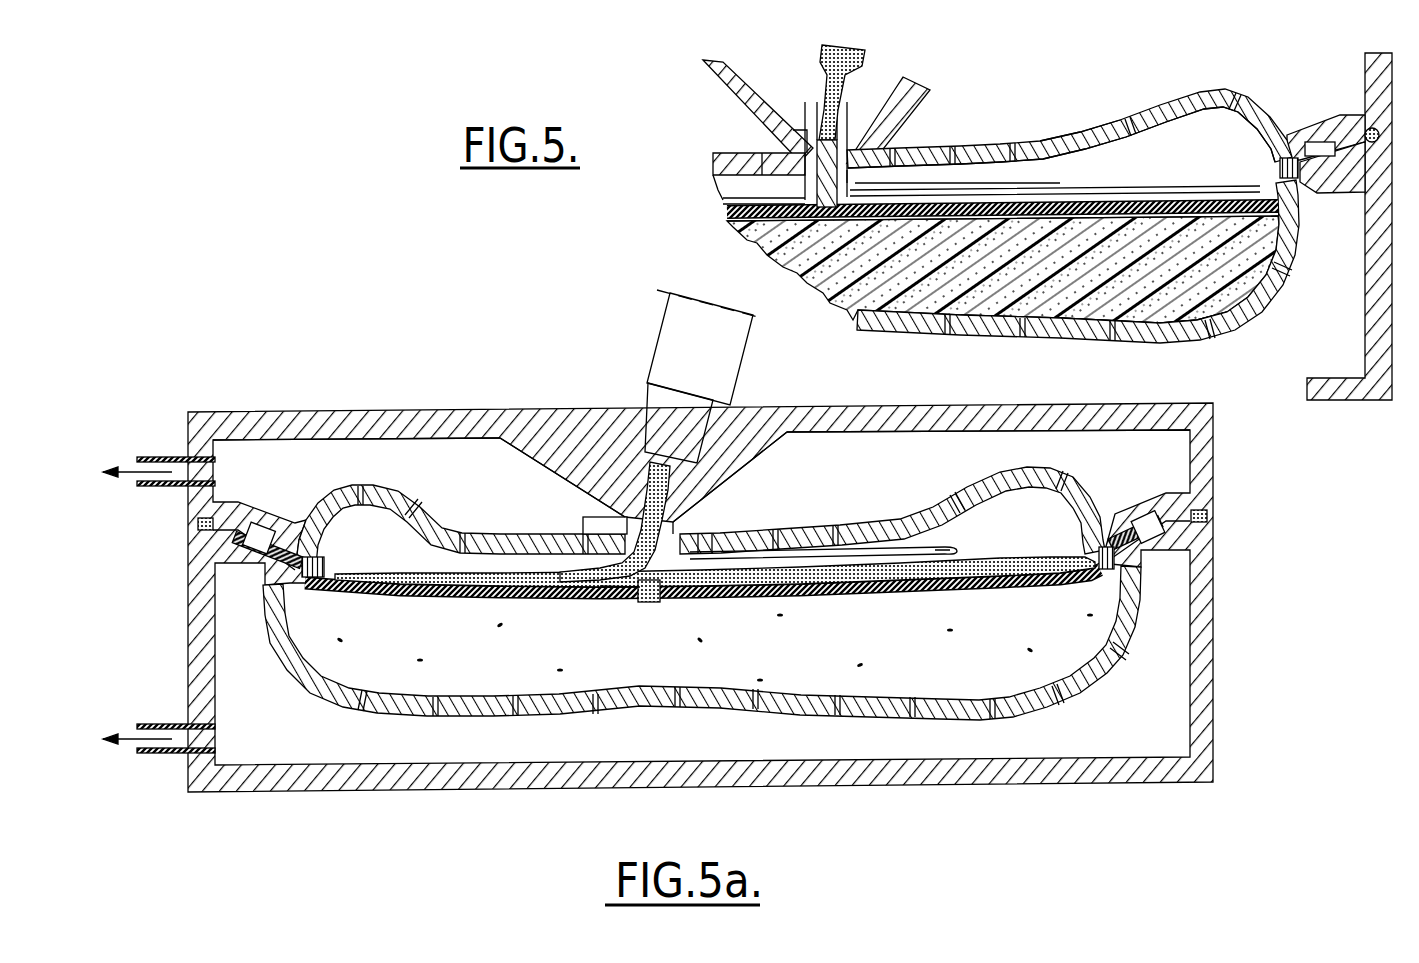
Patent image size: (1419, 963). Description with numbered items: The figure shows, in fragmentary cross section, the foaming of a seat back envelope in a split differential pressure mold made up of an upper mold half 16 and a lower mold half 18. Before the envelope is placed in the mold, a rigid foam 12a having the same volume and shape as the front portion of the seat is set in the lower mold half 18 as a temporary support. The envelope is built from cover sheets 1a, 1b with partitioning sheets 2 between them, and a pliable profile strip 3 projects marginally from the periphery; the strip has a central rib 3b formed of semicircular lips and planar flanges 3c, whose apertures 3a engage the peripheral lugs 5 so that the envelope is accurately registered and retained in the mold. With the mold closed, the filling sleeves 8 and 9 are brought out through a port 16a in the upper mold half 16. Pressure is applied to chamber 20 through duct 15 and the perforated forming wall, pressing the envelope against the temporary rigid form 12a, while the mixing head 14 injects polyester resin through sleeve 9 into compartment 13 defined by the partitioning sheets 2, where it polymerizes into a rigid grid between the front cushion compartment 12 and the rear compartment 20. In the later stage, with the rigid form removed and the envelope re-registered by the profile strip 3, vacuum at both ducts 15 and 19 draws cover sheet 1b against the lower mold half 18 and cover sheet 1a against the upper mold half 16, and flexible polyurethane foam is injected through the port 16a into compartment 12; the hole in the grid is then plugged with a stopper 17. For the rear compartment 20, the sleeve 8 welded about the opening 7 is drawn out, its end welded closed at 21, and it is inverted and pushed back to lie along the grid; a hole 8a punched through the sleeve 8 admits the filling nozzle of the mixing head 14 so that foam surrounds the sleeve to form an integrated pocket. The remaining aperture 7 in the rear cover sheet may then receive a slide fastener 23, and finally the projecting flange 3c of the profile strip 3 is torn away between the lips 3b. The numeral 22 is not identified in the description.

In FIG. 5a, the cover sheet 1a is at (433, 527).
In FIG. 5, the cover sheet 1a is at (1140, 195).
In FIG. 5a, the cover sheet 1b is at (385, 700).
In FIG. 5, the cover sheet 1b is at (1063, 207).
In FIG. 5a, the partitioning sheet 2 is at (500, 580).
In FIG. 5, the partitioning sheet 2 is at (1203, 203).
In FIG. 5a, the profile strip 3 is at (313, 568).
In FIG. 5, the profile strip 3 is at (1288, 156).
In FIG. 5a, the apertures 3a is at (258, 533).
In FIG. 5a, the central rib 3b is at (295, 547).
In FIG. 5a, the planar flanges 3c is at (275, 568).
In FIG. 5, the lugs 5 is at (1318, 142).
In FIG. 5a, the opening 7 is at (680, 525).
In FIG. 5, the opening 7 is at (843, 190).
In FIG. 5a, the filling sleeve 8 is at (843, 567).
In FIG. 5, the filling sleeve 8 is at (847, 163).
In FIG. 5a, the hole 8a is at (637, 592).
In FIG. 5, the second filling sleeve 9 is at (808, 120).
In FIG. 5a, the front cushion compartment 12 is at (870, 635).
In FIG. 5, the front cushion compartment 12 is at (1117, 312).
In FIG. 5, the rigid foam 12a is at (1220, 298).
In FIG. 5a, the compartment 13 is at (465, 598).
In FIG. 5, the compartment 13 is at (1095, 200).
In FIG. 5a, the mixing head 14 is at (667, 470).
In FIG. 5, the mixing head 14 is at (820, 62).
In FIG. 5a, the duct 15 is at (162, 457).
In FIG. 5a, the upper mold half 16 is at (463, 424).
In FIG. 5, the upper mold half 16 is at (1038, 128).
In FIG. 5a, the port 16a is at (677, 500).
In FIG. 5, the port 16a is at (847, 113).
In FIG. 5a, the stopper 17 is at (650, 602).
In FIG. 5a, the lower mold half 18 is at (541, 773).
In FIG. 5, the lower mold half 18 is at (1367, 277).
In FIG. 5a, the duct 19 is at (160, 723).
In FIG. 5a, the rear compartment 20 is at (1017, 533).
In FIG. 5, the rear compartment 20 is at (1195, 130).
In FIG. 5a, the welded closure 21 is at (940, 547).
In FIG. 5a, the seal 22 is at (190, 523).
In FIG. 5a, the slide fastener 23 is at (620, 523).